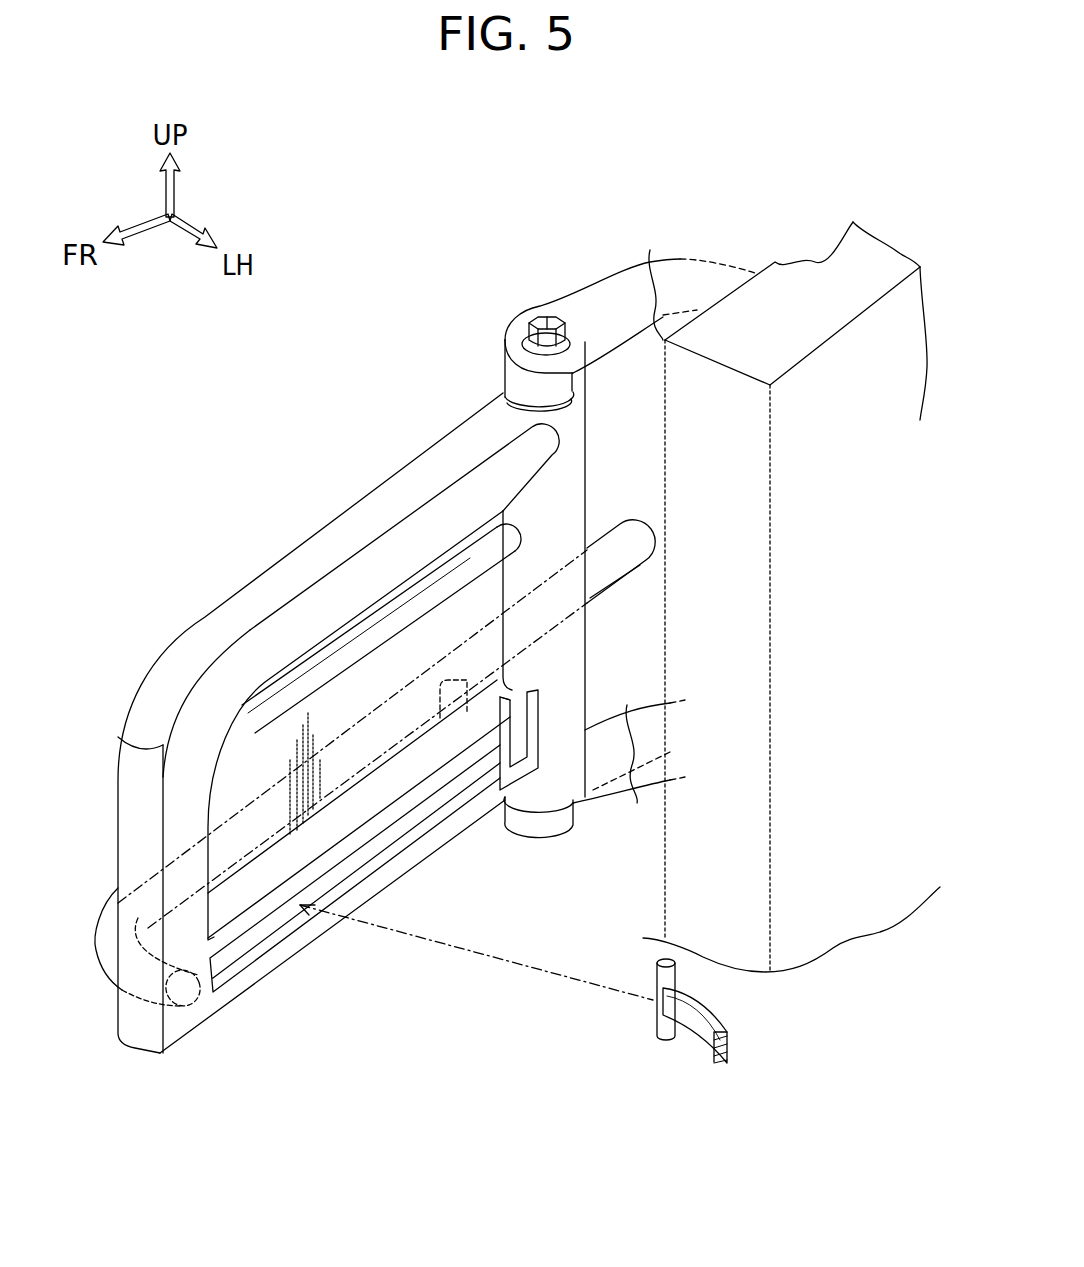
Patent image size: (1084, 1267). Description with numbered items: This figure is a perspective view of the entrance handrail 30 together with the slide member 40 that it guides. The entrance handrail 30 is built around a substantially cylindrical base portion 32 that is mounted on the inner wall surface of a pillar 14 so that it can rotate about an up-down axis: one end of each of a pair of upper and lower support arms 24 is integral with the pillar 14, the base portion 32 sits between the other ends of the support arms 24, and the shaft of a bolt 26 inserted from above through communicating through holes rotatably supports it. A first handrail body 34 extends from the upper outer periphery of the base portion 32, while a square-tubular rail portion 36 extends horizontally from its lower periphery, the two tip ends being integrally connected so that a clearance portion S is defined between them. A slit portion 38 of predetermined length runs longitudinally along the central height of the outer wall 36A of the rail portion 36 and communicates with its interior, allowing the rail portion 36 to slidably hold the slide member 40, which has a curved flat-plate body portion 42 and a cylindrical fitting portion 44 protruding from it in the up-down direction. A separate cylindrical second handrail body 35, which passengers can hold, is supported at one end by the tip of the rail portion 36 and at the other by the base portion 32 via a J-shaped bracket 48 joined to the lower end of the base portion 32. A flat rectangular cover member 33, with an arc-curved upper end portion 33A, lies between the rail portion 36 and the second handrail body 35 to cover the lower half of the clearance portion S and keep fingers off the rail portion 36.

The pillar 14 is at (780, 266).
The support arm 24 is at (597, 293).
The bolt 26 is at (543, 317).
The entrance handrail 30 is at (350, 497).
The base portion 32 is at (588, 457).
The cover member 33 is at (290, 680).
The upper end portion of the cover member 33A is at (353, 645).
The first handrail body 34 is at (420, 483).
The second handrail body 35 is at (96, 950).
The rail portion 36 is at (447, 840).
The outer wall 36A is at (225, 990).
The slit portion 38 is at (270, 940).
The slide member 40 is at (705, 1050).
The body portion 42 is at (710, 1005).
The fitting portion 44 is at (657, 1025).
The bracket 48 is at (482, 707).
The clearance portion S is at (478, 545).